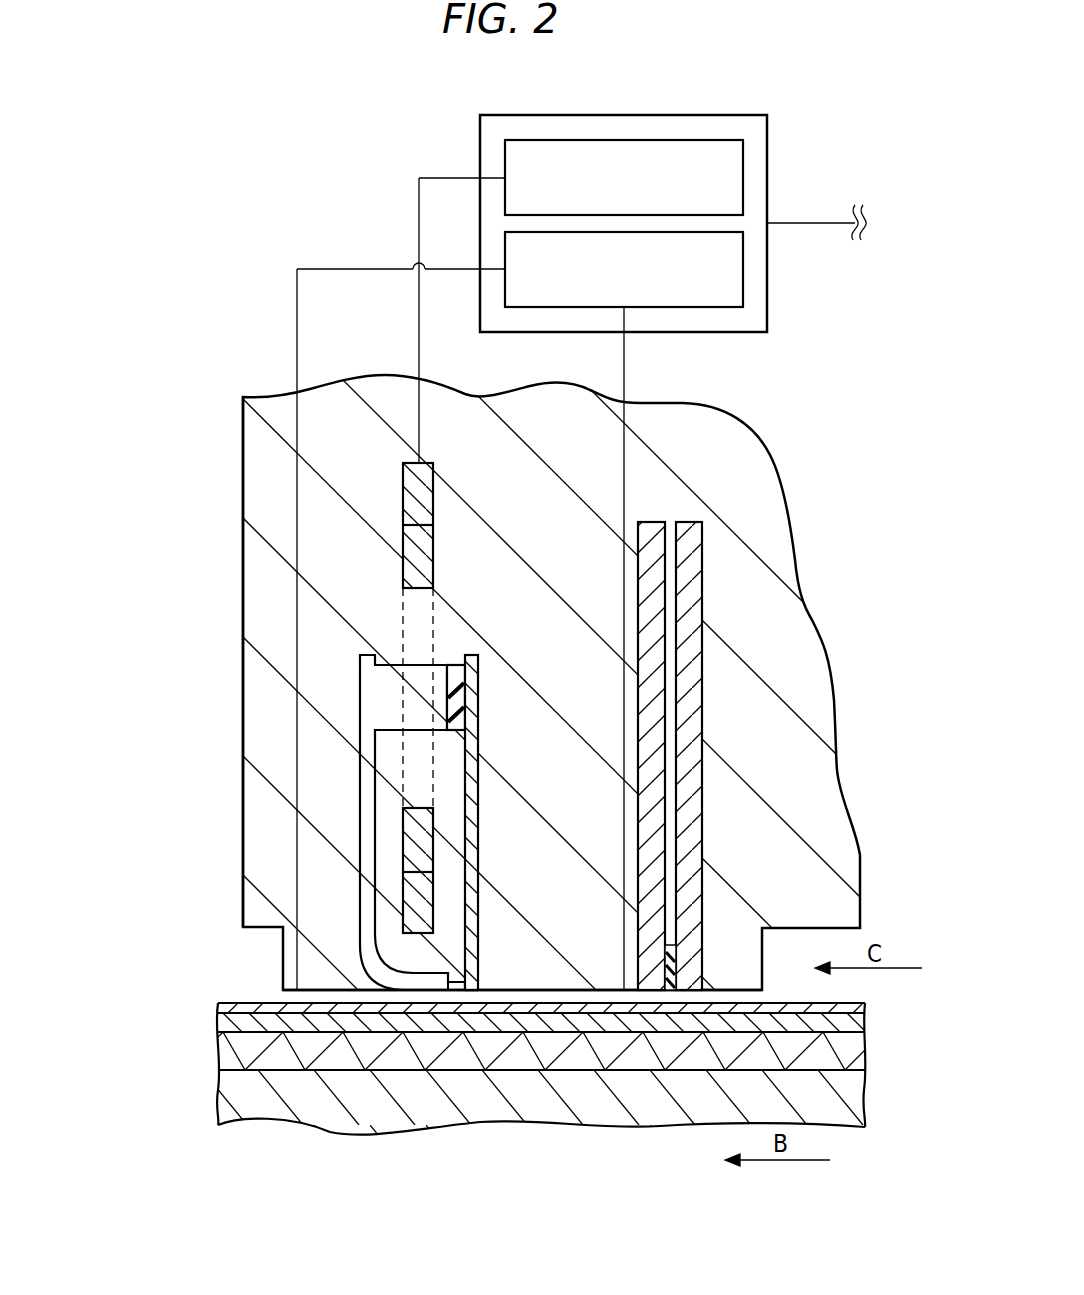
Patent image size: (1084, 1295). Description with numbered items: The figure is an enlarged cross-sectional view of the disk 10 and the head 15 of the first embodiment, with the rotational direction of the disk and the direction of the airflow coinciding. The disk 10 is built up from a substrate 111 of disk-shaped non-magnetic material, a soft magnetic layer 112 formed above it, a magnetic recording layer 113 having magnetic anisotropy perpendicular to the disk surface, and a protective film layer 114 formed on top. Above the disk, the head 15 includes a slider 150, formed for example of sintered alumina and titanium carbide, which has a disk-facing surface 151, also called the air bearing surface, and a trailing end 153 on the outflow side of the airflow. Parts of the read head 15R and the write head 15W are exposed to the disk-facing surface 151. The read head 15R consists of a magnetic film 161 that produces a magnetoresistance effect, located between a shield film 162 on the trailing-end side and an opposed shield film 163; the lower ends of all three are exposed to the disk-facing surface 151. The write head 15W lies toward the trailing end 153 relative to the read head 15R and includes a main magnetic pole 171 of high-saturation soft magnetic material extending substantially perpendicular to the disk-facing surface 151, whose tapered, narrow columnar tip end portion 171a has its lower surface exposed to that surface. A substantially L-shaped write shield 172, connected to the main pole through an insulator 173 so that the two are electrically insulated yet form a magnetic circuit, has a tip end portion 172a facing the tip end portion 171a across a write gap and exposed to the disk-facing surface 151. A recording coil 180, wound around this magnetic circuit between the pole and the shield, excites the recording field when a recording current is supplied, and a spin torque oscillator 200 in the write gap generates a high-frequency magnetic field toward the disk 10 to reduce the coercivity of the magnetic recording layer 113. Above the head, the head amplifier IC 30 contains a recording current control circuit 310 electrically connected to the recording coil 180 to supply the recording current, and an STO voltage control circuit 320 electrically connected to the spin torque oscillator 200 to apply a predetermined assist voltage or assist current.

The disk 10 is at (122, 1022).
The substrate 111 is at (220, 1098).
The soft magnetic layer 112 is at (220, 1057).
The magnetic recording layer 113 is at (218, 1026).
The protective film layer 114 is at (218, 1009).
The head 15 is at (155, 658).
The write head 15W is at (488, 465).
The read head 15R is at (722, 627).
The slider 150 is at (760, 472).
The disk-facing surface 151 is at (742, 994).
The trailing end 153 is at (243, 600).
The magnetic film 161 is at (670, 962).
The shield film 162 is at (650, 737).
The shield film 163 is at (690, 705).
The main magnetic pole 171 is at (478, 836).
The tip end portion of the main magnetic pole 171a is at (478, 990).
The write shield 172 is at (350, 805).
The tip end portion of the write shield 172a is at (375, 990).
The insulator 173 is at (450, 700).
The recording coil 180 is at (403, 560).
The spin torque oscillator 200 is at (455, 988).
The head amplifier IC 30 is at (700, 113).
The recording current control circuit 310 is at (745, 185).
The STO voltage control circuit 320 is at (745, 272).